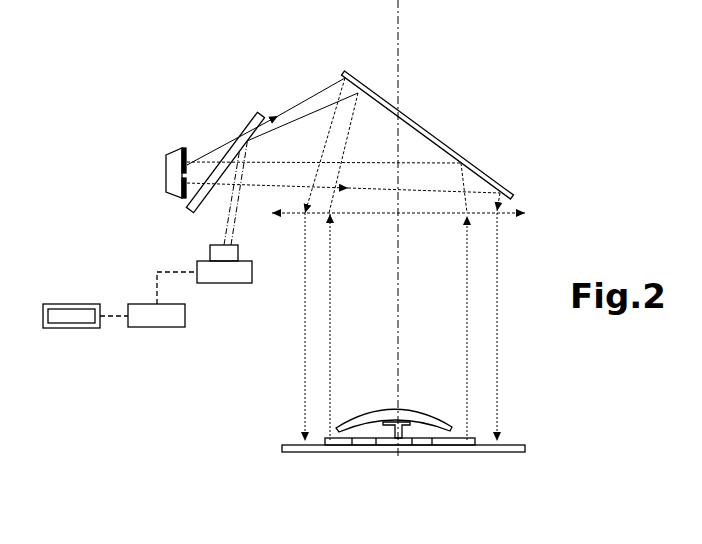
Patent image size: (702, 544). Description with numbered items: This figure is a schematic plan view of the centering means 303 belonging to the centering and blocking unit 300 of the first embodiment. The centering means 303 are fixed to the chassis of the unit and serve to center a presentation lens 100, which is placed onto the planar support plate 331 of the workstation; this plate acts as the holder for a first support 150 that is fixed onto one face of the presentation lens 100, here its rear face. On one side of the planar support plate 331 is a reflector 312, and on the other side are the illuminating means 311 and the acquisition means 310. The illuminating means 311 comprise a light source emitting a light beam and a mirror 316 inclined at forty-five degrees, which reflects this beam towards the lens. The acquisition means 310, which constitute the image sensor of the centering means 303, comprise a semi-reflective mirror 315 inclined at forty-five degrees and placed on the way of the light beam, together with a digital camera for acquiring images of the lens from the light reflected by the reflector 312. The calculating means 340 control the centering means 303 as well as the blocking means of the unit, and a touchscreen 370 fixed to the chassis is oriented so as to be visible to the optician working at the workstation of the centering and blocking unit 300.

The centering and blocking unit 300 is at (172, 62).
The centering means 303 is at (437, 83).
The illuminating means 311 is at (165, 180).
The semi-reflective mirror 315 is at (256, 111).
The mirror 316 is at (425, 128).
The acquisition means 310 is at (227, 283).
The calculating means 340 is at (163, 327).
The touchscreen 370 is at (62, 328).
The reflector 312 is at (512, 444).
The planar support plate 331 is at (470, 433).
The presentation lens 100 is at (353, 430).
The first support 150 is at (378, 446).